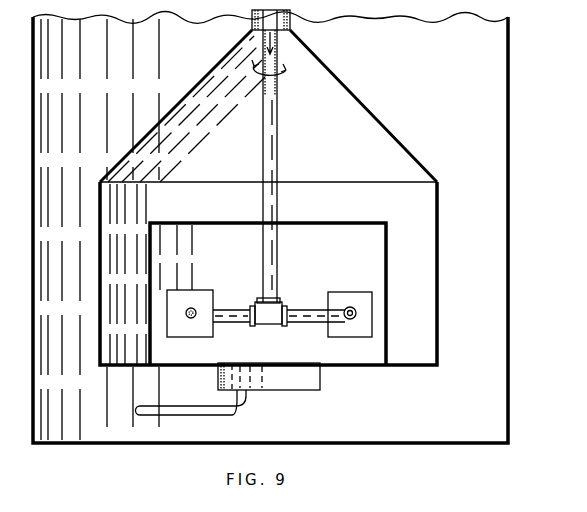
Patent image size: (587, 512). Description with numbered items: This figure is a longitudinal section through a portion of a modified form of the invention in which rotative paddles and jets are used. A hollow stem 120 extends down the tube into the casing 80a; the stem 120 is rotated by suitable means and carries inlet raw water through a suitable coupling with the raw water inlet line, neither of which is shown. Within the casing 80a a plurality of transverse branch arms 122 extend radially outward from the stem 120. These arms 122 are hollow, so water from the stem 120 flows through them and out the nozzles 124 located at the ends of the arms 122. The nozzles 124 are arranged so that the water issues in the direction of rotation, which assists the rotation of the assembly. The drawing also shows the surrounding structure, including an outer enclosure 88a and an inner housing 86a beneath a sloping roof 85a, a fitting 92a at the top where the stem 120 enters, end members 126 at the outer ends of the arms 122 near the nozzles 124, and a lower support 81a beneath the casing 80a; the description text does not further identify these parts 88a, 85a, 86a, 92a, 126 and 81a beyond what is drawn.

The outer tank 88a is at (88, 445).
The conical roof 85a is at (380, 117).
The inner tank 86a is at (420, 315).
The casing 80a is at (388, 262).
The pipe housing 92a is at (290, 22).
The hollow stem 120 is at (278, 126).
The transverse branch arms 122 is at (237, 309).
The box 126 is at (177, 292).
The nozzles 124 is at (190, 308).
The bottom bracket 81a is at (300, 386).